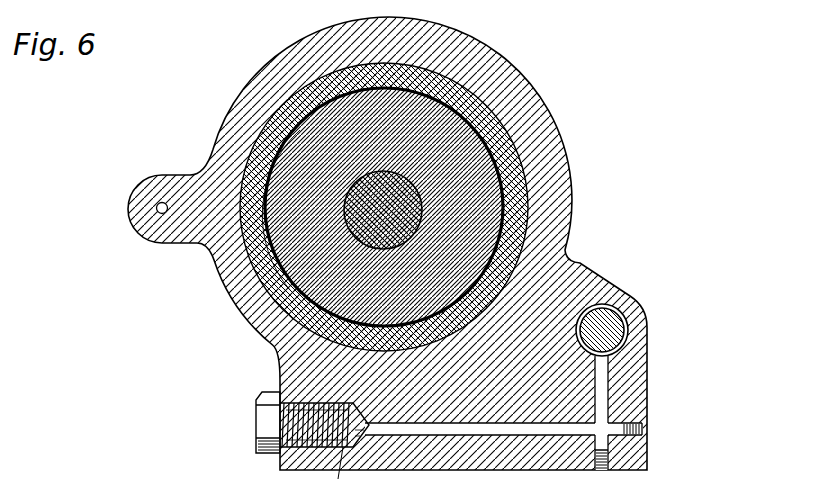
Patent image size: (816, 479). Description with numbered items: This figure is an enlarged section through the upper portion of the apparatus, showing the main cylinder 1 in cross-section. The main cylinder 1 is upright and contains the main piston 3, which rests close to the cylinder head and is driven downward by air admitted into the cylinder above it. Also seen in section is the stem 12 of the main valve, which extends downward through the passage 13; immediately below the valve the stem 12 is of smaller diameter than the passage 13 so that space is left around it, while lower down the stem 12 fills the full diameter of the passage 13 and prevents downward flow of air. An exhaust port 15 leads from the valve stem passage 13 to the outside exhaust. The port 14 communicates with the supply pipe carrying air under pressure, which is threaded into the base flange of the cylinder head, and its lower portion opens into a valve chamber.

The main cylinder 1 is at (547, 207).
The main piston 3 is at (430, 137).
The stem 12 is at (603, 322).
The passage 13 is at (628, 317).
The port 14 is at (156, 208).
The exhaust port 15 is at (600, 395).